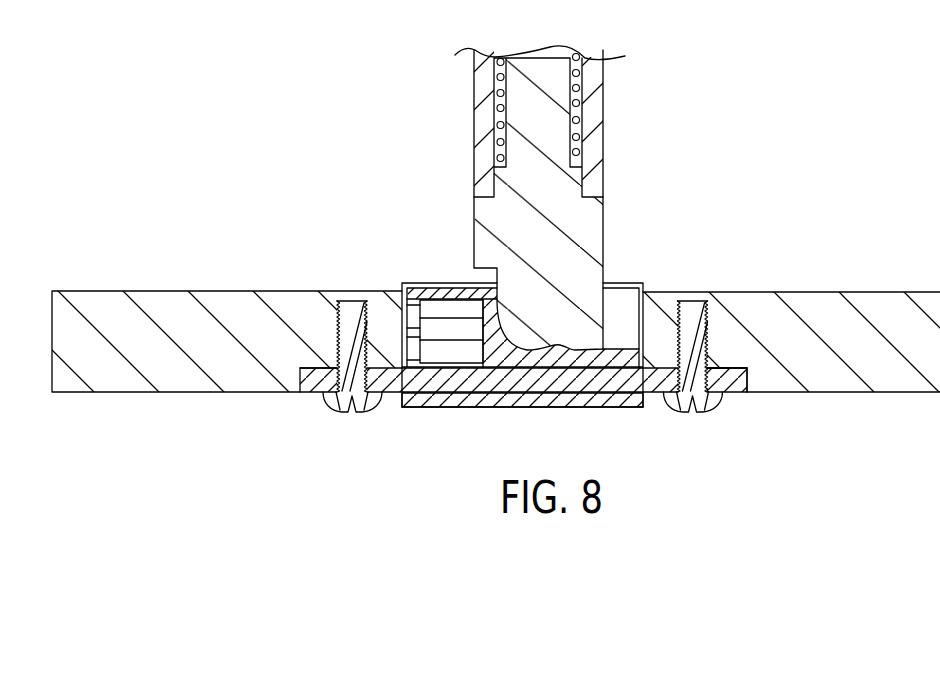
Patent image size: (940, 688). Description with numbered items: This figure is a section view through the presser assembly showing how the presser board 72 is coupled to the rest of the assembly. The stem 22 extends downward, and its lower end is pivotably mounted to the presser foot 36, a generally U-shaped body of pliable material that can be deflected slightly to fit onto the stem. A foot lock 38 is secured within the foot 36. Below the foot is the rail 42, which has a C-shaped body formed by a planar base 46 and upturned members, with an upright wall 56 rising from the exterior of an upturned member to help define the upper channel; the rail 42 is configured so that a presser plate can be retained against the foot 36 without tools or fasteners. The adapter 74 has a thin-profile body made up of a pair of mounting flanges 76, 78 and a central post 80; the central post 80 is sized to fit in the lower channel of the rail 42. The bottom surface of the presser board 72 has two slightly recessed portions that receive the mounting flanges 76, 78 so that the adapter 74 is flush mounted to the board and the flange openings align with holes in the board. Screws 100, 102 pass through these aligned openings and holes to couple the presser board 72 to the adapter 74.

The stem 22 is at (575, 229).
The presser foot 36 is at (621, 283).
The foot lock 38 is at (443, 306).
The rail 42 is at (410, 421).
The planar base 46 is at (596, 406).
The upright wall 56 is at (455, 397).
The presser board 72 is at (170, 308).
The adapter 74 is at (733, 364).
The mounting flange 76 is at (307, 379).
The mounting flange 78 is at (742, 373).
The central post 80 is at (551, 378).
The screw 100 is at (336, 406).
The screw 102 is at (718, 402).